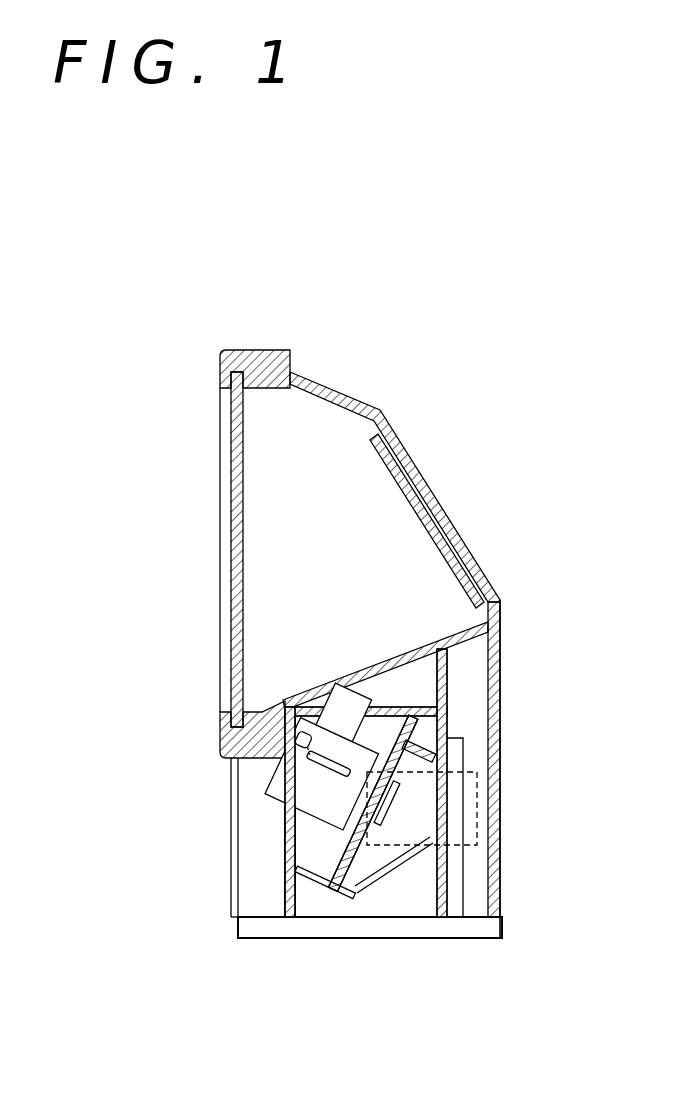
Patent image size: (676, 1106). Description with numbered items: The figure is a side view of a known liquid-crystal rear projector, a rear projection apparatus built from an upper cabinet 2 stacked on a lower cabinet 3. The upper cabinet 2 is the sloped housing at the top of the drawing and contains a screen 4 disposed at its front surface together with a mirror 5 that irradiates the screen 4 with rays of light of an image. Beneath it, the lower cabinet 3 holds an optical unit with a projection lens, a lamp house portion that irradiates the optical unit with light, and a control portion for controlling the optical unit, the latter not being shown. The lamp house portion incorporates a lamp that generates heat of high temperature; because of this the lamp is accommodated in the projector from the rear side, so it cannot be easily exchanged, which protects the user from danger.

The upper cabinet 2 is at (348, 388).
The lower cabinet 3 is at (505, 653).
The screen 4 is at (232, 487).
The mirror 5 is at (422, 476).